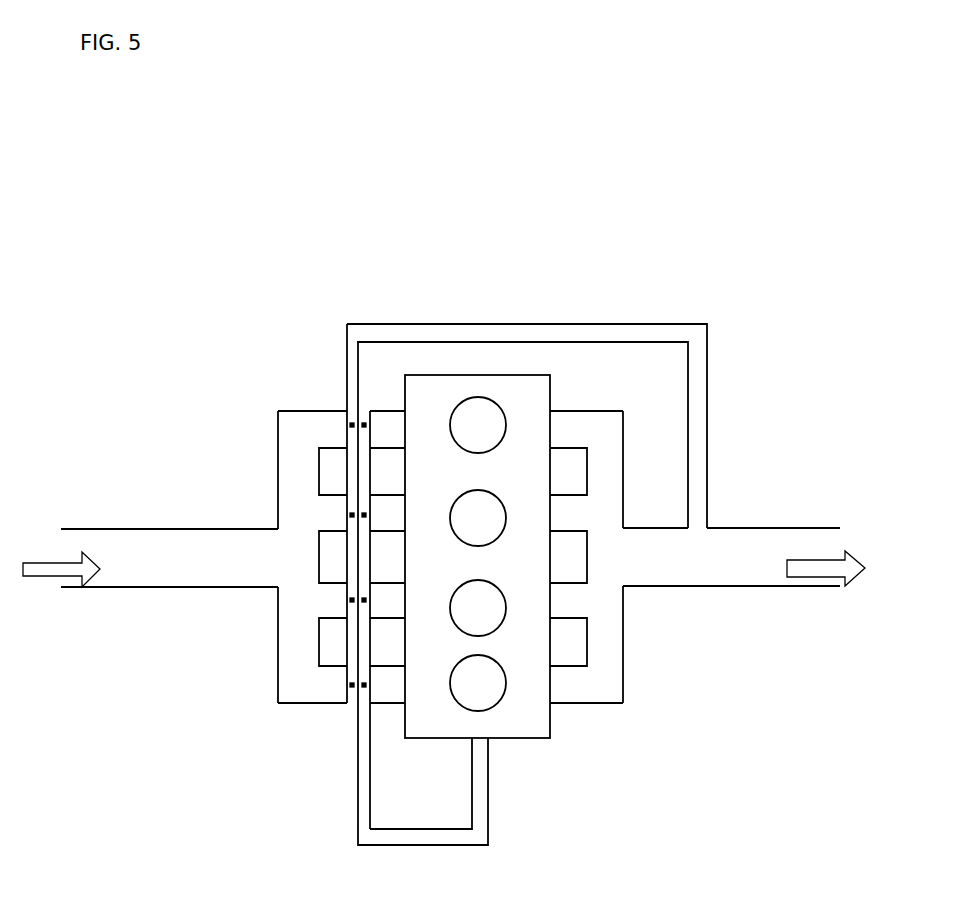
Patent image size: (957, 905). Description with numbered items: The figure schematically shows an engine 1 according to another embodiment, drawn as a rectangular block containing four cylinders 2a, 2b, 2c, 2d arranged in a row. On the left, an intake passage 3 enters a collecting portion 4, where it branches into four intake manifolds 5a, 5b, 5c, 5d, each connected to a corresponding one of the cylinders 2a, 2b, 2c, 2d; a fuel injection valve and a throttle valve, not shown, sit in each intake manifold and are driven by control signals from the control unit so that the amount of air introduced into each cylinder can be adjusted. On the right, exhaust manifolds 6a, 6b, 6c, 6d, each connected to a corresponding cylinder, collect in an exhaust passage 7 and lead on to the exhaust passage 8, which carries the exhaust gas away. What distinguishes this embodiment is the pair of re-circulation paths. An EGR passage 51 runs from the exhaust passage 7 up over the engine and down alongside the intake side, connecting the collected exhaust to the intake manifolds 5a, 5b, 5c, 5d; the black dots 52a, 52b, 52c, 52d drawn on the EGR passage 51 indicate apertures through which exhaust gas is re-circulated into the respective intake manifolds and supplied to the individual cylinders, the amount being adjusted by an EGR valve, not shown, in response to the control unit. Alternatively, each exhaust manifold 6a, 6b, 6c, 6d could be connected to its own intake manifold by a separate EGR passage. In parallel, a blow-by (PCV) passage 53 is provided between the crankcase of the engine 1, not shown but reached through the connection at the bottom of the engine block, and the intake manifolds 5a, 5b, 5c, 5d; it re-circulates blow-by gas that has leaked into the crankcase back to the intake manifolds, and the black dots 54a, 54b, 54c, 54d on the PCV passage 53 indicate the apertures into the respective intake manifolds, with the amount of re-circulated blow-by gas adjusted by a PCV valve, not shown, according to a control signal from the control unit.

The engine 1 is at (445, 740).
The cylinder 2a is at (478, 425).
The cylinder 2b is at (478, 518).
The cylinder 2c is at (478, 608).
The cylinder 2d is at (478, 683).
The intake passage 3 is at (135, 589).
The collecting portion 4 is at (272, 567).
The intake manifold 5a is at (352, 439).
The intake manifold 5b is at (352, 513).
The intake manifold 5c is at (352, 600).
The intake manifold 5d is at (352, 683).
The exhaust manifold 6a is at (570, 435).
The exhaust manifold 6b is at (578, 521).
The exhaust manifold 6c is at (577, 606).
The exhaust manifold 6d is at (578, 688).
The exhaust passage 7 is at (628, 546).
The exhaust passage 8 is at (723, 586).
The EGR passage 51 is at (588, 323).
The aperture 52a is at (346, 407).
The aperture 52b is at (342, 506).
The aperture 52c is at (341, 607).
The aperture 52d is at (342, 698).
The blow-by (PCV) passage 53 is at (385, 845).
The aperture 54a is at (368, 401).
The aperture 54b is at (354, 499).
The aperture 54c is at (353, 615).
The aperture 54d is at (354, 712).